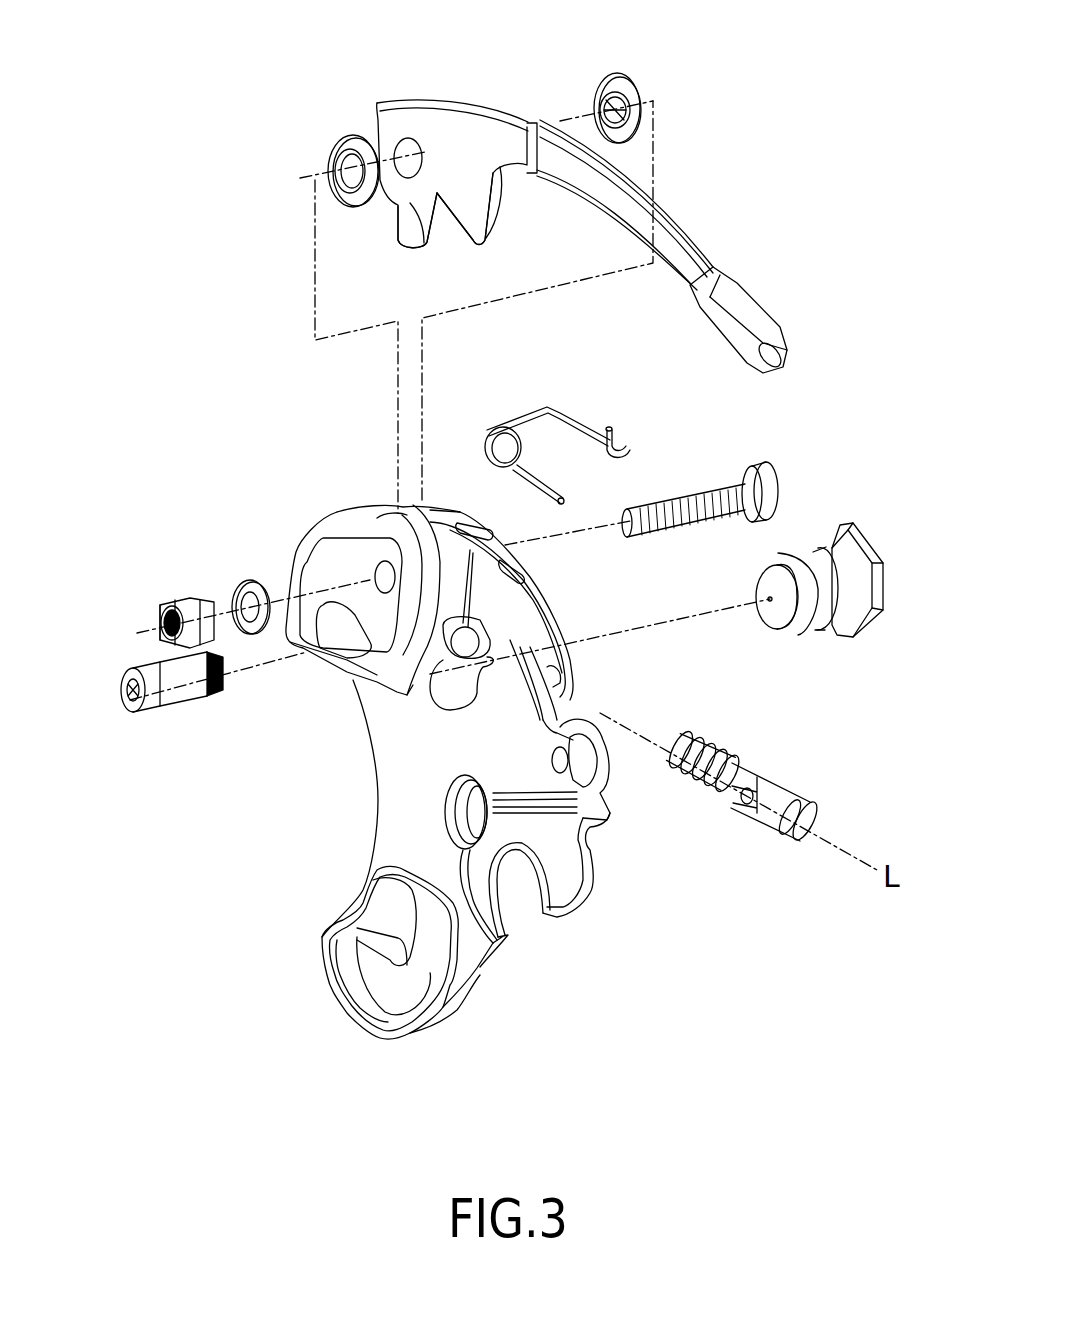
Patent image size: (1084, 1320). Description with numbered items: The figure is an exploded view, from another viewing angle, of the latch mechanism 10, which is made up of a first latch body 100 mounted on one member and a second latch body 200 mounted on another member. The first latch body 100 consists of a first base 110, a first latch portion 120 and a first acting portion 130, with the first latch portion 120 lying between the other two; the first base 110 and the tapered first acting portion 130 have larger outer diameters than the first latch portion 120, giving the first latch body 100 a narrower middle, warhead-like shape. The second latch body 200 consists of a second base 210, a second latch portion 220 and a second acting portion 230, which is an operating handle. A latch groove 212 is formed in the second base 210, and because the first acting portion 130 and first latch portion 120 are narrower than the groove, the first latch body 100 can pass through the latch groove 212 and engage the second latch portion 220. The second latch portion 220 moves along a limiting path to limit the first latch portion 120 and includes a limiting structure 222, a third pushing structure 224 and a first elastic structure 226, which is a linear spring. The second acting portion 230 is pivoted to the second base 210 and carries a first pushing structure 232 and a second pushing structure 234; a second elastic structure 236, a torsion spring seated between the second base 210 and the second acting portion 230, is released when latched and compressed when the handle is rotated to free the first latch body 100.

The latch mechanism 10 is at (128, 1203).
The first latch body 100 is at (782, 378).
The first base 110 is at (860, 538).
The first latch portion 120 is at (823, 553).
The first acting portion 130 is at (787, 560).
The second latch body 200 is at (507, 1076).
The second base 210 is at (323, 972).
The latch groove 212 is at (460, 695).
The second latch portion 220 is at (742, 1076).
The limiting structure 222 is at (813, 803).
The third pushing structure 224 is at (177, 700).
The first elastic structure 226 is at (697, 743).
The second acting portion 230 is at (694, 201).
The first pushing structure 232 is at (400, 235).
The second pushing structure 234 is at (475, 238).
The second elastic structure 236 is at (567, 423).